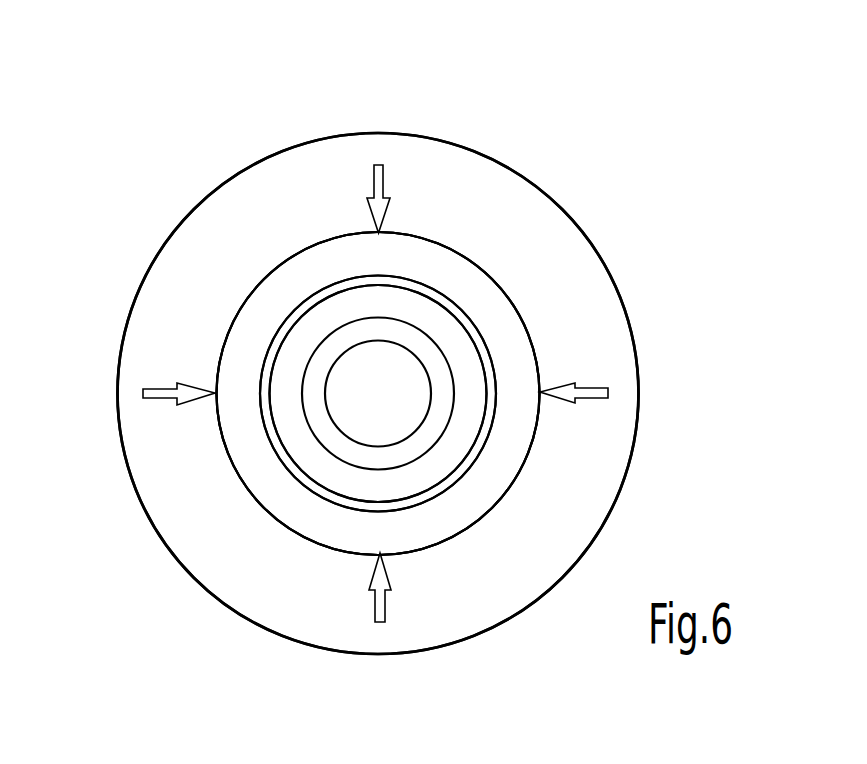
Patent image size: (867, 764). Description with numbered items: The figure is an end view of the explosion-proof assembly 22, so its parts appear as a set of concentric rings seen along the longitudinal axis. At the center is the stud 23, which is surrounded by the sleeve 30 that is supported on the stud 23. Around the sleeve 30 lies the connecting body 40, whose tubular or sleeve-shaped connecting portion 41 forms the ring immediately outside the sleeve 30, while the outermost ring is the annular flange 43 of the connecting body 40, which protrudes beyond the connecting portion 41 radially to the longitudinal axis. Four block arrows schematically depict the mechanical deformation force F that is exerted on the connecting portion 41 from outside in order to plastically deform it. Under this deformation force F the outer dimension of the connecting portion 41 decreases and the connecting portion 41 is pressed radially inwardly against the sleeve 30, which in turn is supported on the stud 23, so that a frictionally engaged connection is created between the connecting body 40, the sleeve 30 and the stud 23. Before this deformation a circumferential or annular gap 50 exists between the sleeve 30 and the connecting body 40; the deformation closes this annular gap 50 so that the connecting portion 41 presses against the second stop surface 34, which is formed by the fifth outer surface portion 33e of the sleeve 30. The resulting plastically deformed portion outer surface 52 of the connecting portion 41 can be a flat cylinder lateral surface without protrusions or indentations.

The explosion-proof assembly 22 is at (629, 172).
The stud 23 is at (335, 423).
The sleeve 30 is at (457, 440).
The fifth outer surface portion 33e is at (496, 359).
The second stop surface 34 is at (378, 393).
The connecting body 40 is at (547, 285).
The connecting portion 41 is at (243, 300).
The annular flange 43 is at (317, 163).
The annular gap 50 is at (322, 293).
The plastically deformed portion outer surface 52 is at (463, 237).
The deformation force F is at (384, 184).